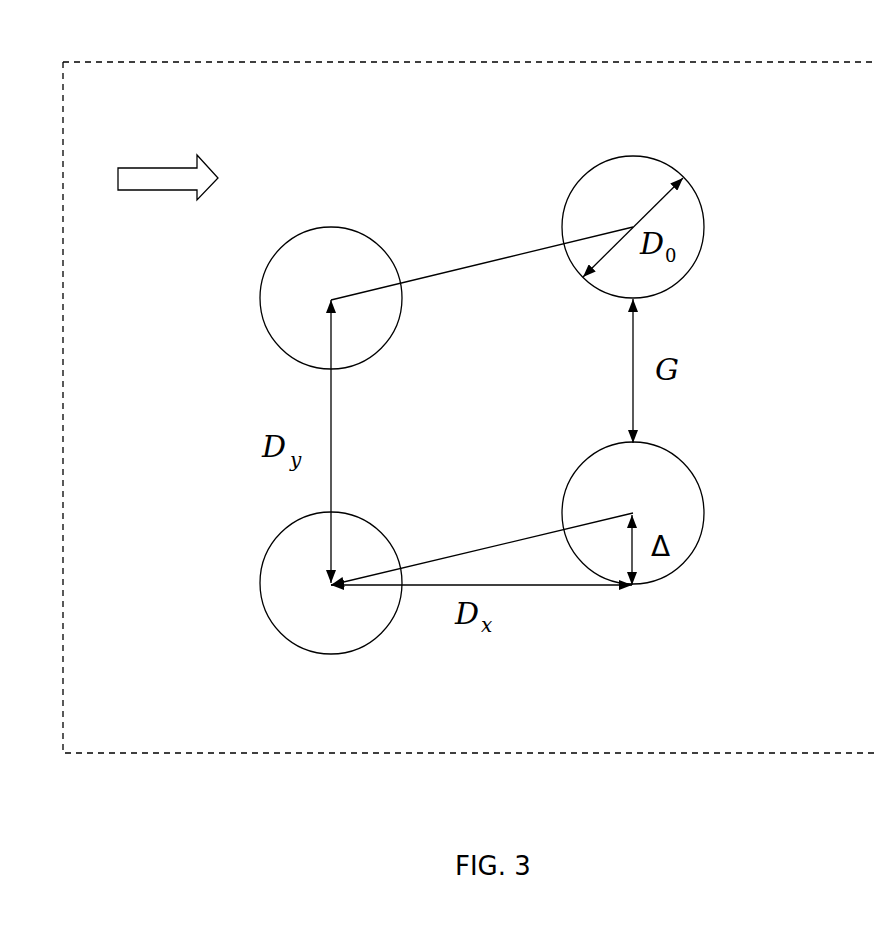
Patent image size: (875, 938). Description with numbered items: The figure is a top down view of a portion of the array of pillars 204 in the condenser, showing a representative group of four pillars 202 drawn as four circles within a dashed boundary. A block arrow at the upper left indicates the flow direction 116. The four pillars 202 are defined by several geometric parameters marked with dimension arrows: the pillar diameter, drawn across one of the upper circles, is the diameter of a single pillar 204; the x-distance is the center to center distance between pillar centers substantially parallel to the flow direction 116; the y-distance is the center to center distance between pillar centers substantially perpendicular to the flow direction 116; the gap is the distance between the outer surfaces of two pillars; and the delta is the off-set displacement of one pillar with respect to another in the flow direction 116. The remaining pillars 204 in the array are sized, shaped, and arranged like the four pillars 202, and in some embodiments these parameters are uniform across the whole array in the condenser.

The four pillars 202 is at (522, 62).
The pillar 204 is at (582, 178).
The flow direction 116 is at (168, 165).